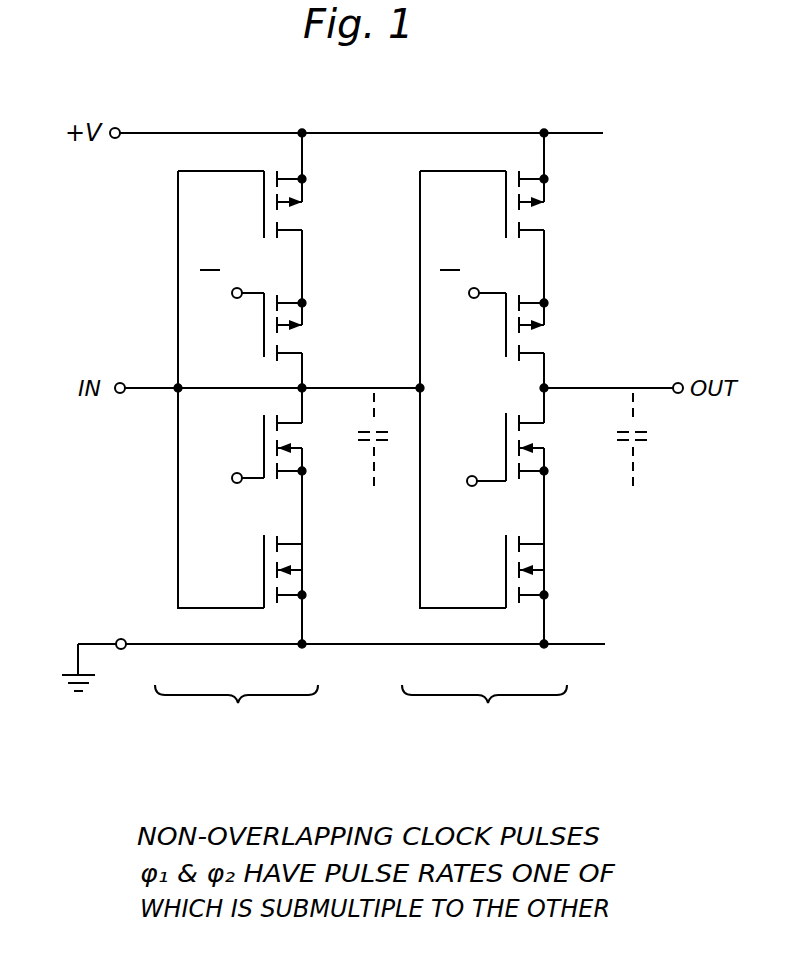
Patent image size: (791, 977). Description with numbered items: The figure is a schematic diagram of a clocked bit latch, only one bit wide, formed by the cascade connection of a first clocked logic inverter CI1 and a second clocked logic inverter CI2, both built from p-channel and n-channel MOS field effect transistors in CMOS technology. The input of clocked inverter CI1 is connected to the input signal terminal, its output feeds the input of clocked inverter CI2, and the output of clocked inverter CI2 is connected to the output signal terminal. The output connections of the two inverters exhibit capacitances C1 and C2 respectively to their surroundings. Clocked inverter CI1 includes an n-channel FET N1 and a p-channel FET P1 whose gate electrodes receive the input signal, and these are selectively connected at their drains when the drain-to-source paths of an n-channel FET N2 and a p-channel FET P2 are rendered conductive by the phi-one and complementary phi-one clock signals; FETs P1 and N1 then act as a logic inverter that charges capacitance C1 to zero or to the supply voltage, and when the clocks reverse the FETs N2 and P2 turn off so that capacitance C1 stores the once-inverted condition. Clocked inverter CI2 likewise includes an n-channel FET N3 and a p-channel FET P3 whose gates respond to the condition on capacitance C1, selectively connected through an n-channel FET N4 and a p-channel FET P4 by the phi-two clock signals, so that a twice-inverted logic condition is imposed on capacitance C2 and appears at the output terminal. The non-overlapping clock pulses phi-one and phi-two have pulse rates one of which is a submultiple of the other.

The p-channel FET P1 is at (304, 204).
The p-channel FET P2 is at (304, 327).
The n-channel FET N1 is at (304, 571).
The n-channel FET N2 is at (304, 447).
The p-channel FET P3 is at (546, 204).
The p-channel FET P4 is at (546, 327).
The n-channel FET N3 is at (549, 571).
The n-channel FET N4 is at (548, 447).
The capacitance C1 is at (384, 440).
The capacitance C2 is at (652, 440).
The first clocked logic inverter CI1 is at (250, 469).
The second clocked logic inverter CI2 is at (497, 469).